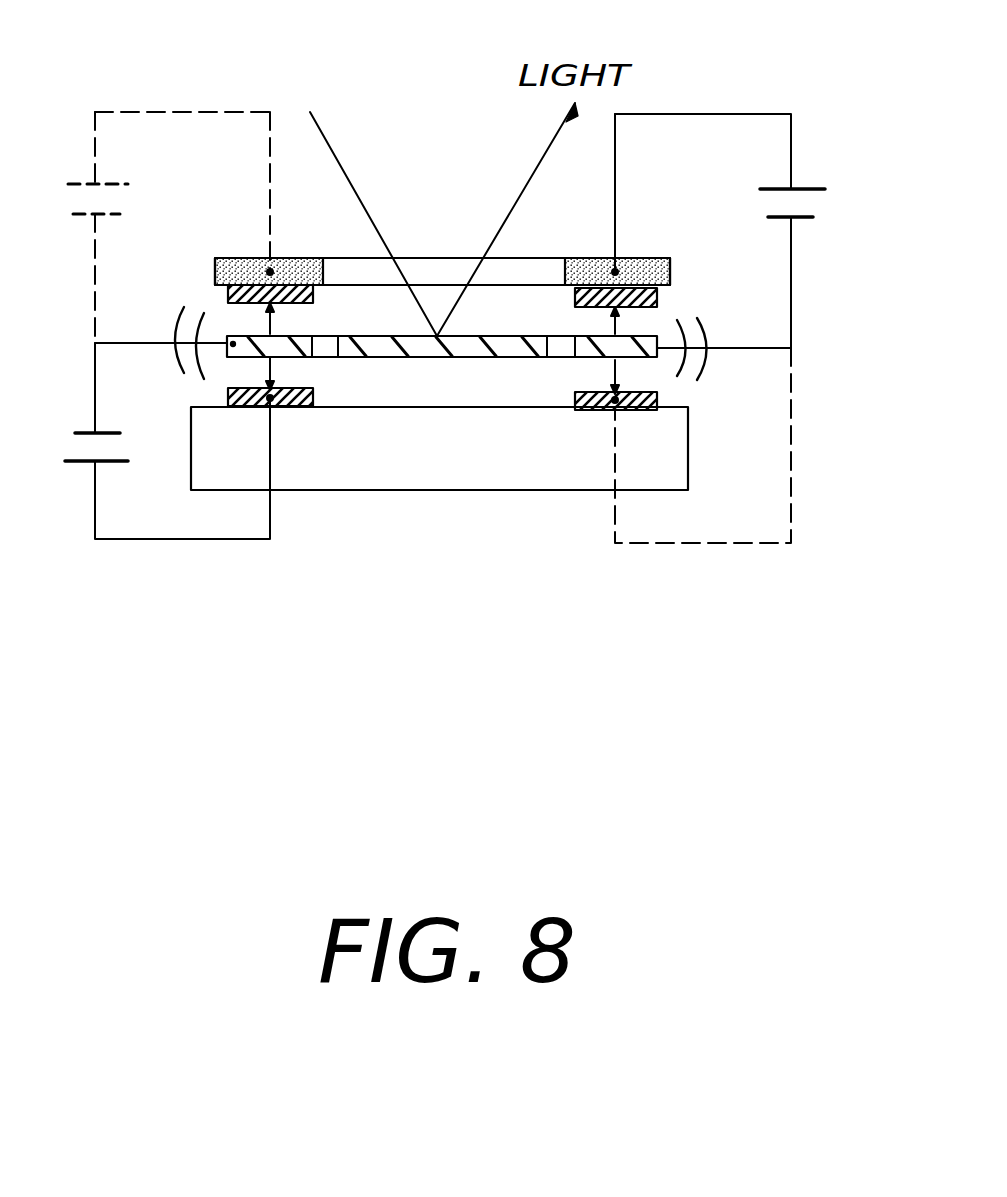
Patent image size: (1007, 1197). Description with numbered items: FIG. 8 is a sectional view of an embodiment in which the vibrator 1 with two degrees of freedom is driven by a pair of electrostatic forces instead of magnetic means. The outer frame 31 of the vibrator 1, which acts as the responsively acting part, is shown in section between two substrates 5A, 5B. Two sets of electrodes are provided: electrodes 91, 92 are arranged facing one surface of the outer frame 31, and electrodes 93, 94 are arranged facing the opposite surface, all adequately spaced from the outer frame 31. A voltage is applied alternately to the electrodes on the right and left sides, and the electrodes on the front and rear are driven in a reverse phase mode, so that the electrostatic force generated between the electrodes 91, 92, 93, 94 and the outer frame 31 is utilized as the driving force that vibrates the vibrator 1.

The vibrator with two degrees of freedom 1 is at (724, 273).
The lower substrate 5A is at (518, 470).
The upper transparent substrate 5B is at (650, 258).
The outer frame 31 is at (430, 358).
The electrode 91 is at (313, 396).
The electrode 92 is at (575, 392).
The electrode 93 is at (228, 293).
The electrode 94 is at (575, 303).